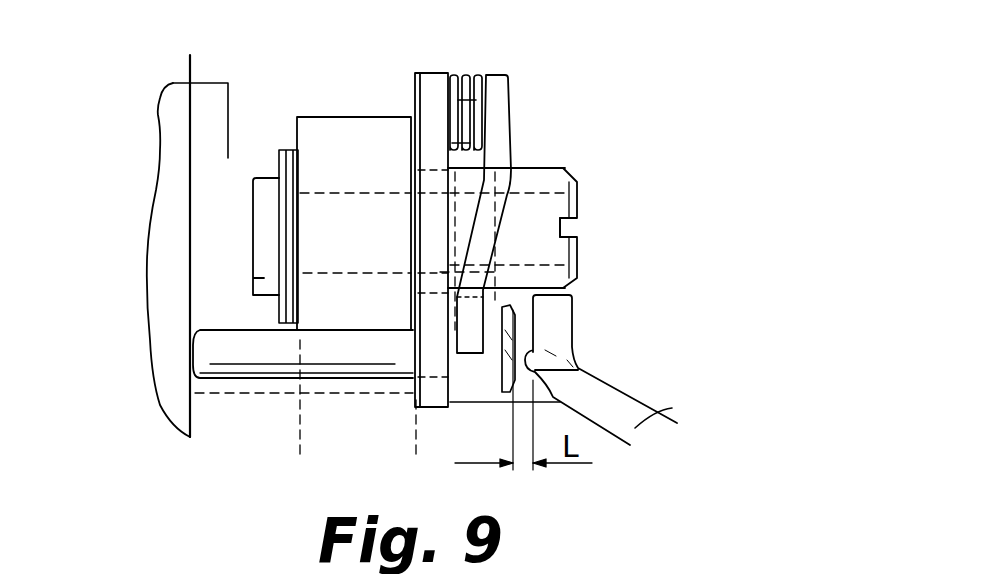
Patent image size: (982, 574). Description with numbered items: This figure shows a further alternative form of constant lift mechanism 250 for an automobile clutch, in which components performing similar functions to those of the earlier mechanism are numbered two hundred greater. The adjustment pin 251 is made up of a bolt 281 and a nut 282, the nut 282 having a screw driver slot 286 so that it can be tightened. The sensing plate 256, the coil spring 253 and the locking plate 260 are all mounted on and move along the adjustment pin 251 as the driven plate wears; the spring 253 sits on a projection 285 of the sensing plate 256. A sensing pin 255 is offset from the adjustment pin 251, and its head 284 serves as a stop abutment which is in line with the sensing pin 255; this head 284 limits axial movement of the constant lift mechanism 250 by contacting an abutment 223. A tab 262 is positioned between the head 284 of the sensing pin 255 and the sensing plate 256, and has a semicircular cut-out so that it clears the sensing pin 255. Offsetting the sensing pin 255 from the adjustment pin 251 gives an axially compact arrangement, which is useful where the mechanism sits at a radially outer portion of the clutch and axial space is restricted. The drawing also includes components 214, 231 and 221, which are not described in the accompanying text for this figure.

The ring 214 is at (279, 150).
The housing block 231 is at (355, 137).
The constant lift mechanism 250 is at (608, 153).
The adjustment pin 251 is at (581, 183).
The spring 253 is at (468, 78).
The sensing pin 255 is at (277, 362).
The sensing plate 256 is at (427, 82).
The locking plate 260 is at (497, 143).
The tab 262 is at (483, 332).
The bolt 281 is at (258, 236).
The nut 282 is at (572, 207).
The head 284 is at (502, 314).
The projection 285 is at (467, 105).
The screw driver slot 286 is at (566, 228).
The abutment 223 is at (578, 369).
The tube 221 is at (672, 408).